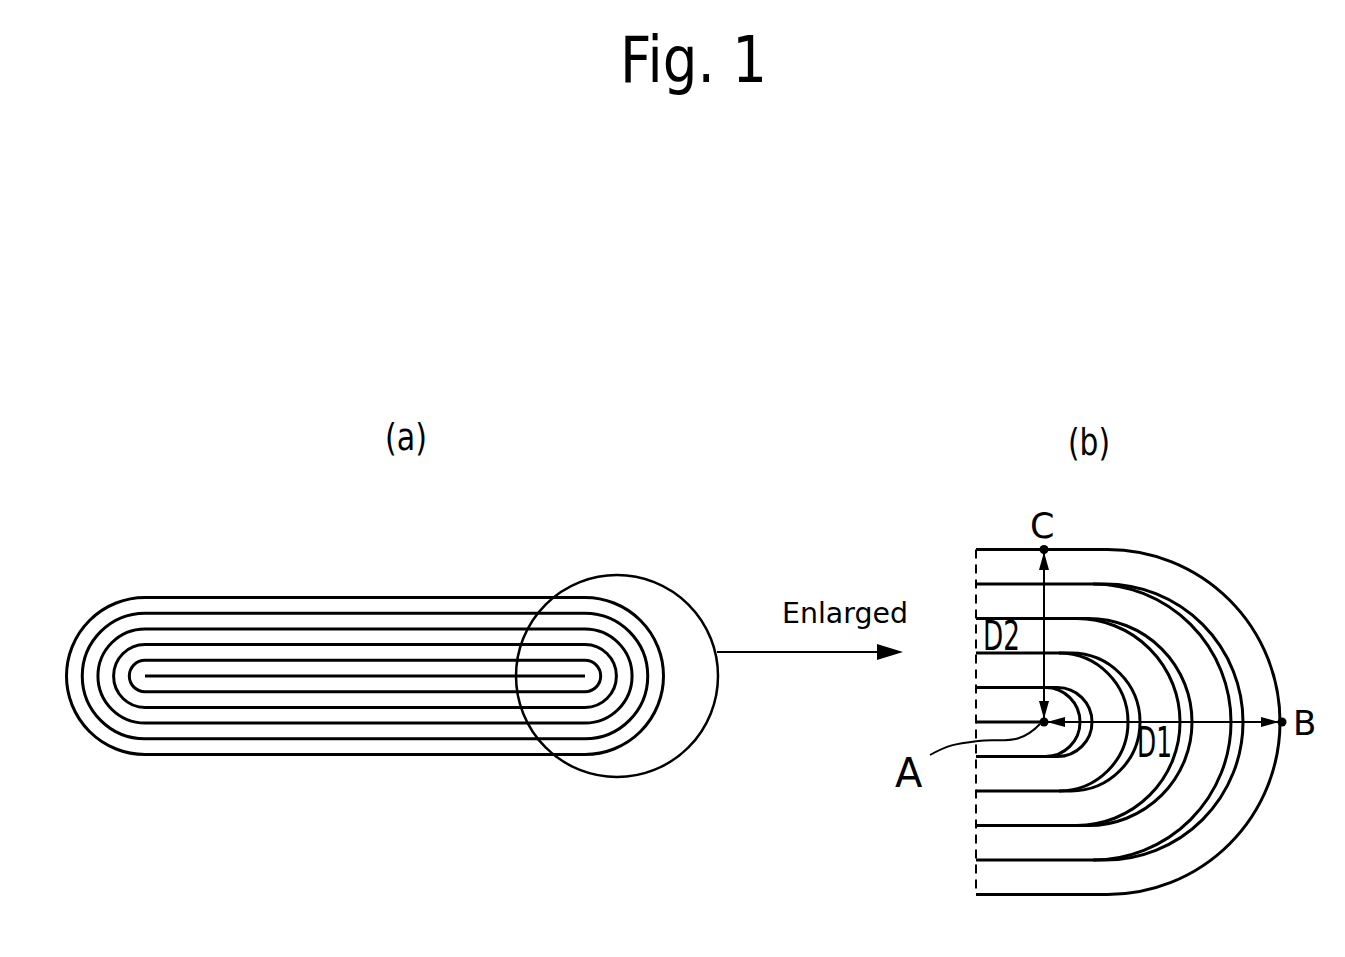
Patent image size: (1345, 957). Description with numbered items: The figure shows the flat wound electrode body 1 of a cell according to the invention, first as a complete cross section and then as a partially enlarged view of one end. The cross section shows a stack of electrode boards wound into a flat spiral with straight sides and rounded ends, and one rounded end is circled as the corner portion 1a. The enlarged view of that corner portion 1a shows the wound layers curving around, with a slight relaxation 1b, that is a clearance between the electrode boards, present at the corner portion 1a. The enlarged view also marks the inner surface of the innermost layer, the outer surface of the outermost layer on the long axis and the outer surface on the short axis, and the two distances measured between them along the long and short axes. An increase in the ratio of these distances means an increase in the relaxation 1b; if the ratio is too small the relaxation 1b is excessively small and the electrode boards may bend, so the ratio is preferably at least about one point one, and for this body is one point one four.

The flat wound electrode body 1 is at (362, 592).
The corner portion 1a is at (665, 703).
The relaxation 1b is at (1230, 758).